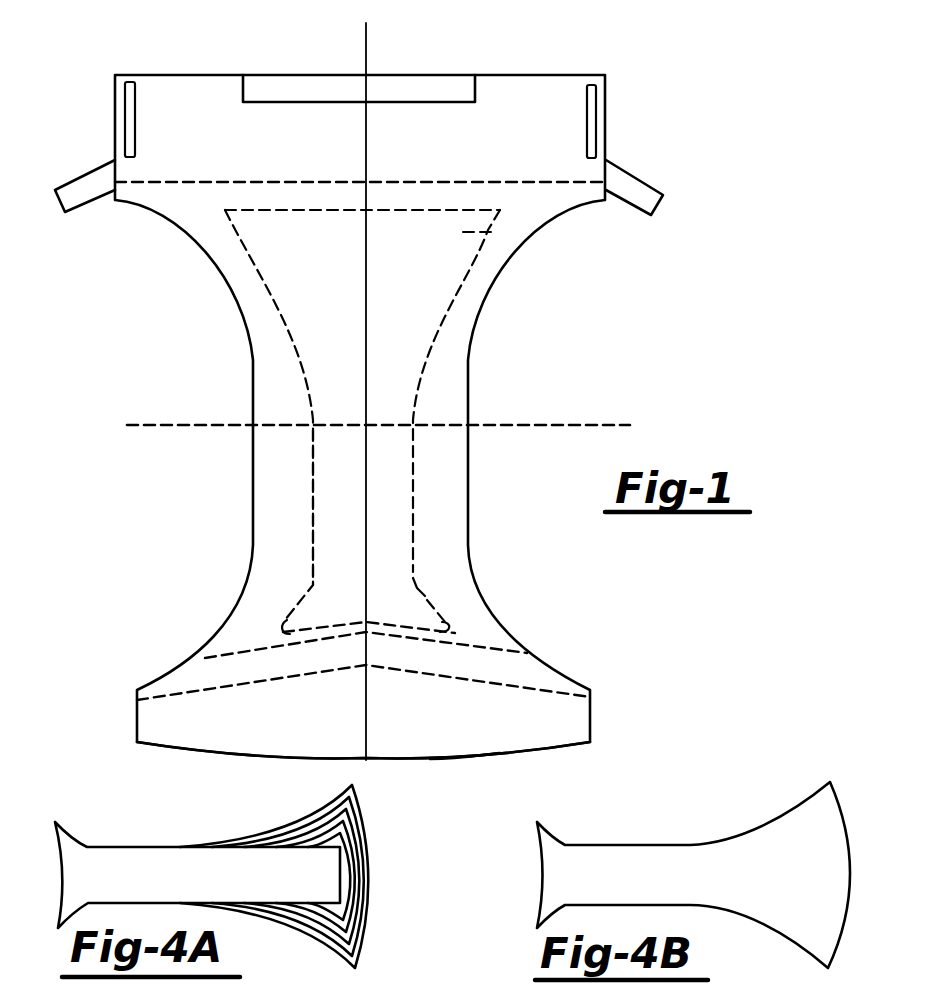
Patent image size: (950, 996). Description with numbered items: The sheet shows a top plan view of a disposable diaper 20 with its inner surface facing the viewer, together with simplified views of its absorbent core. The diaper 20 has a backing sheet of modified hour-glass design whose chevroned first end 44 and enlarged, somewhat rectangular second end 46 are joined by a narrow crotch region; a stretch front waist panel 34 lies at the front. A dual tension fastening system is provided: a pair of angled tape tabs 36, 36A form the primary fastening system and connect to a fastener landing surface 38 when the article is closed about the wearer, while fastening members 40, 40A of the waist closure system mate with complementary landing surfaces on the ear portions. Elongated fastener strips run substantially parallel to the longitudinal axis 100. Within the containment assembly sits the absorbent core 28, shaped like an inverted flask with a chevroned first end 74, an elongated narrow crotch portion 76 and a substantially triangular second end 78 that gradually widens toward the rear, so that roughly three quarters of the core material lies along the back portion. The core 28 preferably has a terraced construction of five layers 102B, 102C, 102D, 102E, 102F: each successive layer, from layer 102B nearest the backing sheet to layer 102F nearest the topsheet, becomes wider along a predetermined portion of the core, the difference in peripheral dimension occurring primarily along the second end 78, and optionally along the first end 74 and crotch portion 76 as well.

In FIG. 1, the diaper 20 is at (92, 72).
In FIG. 1, the absorbent core 28 is at (428, 287).
In FIG. 4A, the absorbent core 28 is at (116, 808).
In FIG. 1, the stretch front waist panel 34 is at (512, 730).
In FIG. 1, the angled tape tab 36 is at (64, 180).
In FIG. 1, the angled tape tab 36A is at (642, 190).
In FIG. 1, the fastener landing surface 38 is at (487, 665).
In FIG. 1, the fastening member 40 is at (127, 115).
In FIG. 1, the fastening member 40A is at (594, 113).
In FIG. 1, the first end 44 is at (493, 757).
In FIG. 1, the second end 46 is at (530, 75).
In FIG. 1, the first end 74 is at (395, 592).
In FIG. 4A, the first end 74 is at (115, 887).
In FIG. 1, the crotch portion 76 is at (388, 470).
In FIG. 4A, the crotch portion 76 is at (210, 887).
In FIG. 1, the second end 78 is at (497, 233).
In FIG. 4A, the second end 78 is at (308, 887).
In FIG. 1, the longitudinal axis 100 is at (362, 702).
In FIG. 4A, the layer 102B is at (358, 802).
In FIG. 4B, the layer 102B is at (730, 848).
In FIG. 4A, the layer 102C is at (352, 829).
In FIG. 4B, the layer 102C is at (772, 994).
In FIG. 4A, the layer 102D is at (348, 857).
In FIG. 4A, the layer 102E is at (345, 902).
In FIG. 4A, the layer 102F is at (355, 926).